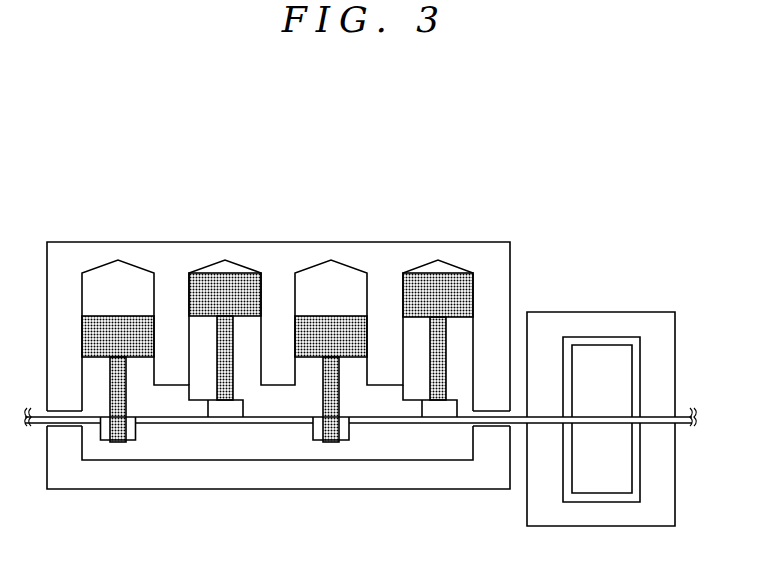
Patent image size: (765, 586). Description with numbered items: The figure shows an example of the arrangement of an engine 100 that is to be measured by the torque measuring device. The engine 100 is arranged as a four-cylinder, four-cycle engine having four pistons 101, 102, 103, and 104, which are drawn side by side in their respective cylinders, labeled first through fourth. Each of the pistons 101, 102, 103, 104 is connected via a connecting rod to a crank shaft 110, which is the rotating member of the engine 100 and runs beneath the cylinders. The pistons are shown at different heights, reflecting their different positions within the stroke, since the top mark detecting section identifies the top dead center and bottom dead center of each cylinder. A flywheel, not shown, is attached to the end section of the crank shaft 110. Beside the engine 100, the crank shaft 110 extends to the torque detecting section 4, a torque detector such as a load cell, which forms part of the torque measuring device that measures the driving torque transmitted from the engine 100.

The engine 100 is at (57, 242).
The piston 101 is at (140, 327).
The piston 102 is at (248, 284).
The piston 103 is at (353, 323).
The piston 104 is at (463, 283).
The crank shaft 110 is at (170, 418).
The torque detecting section 4 is at (637, 312).